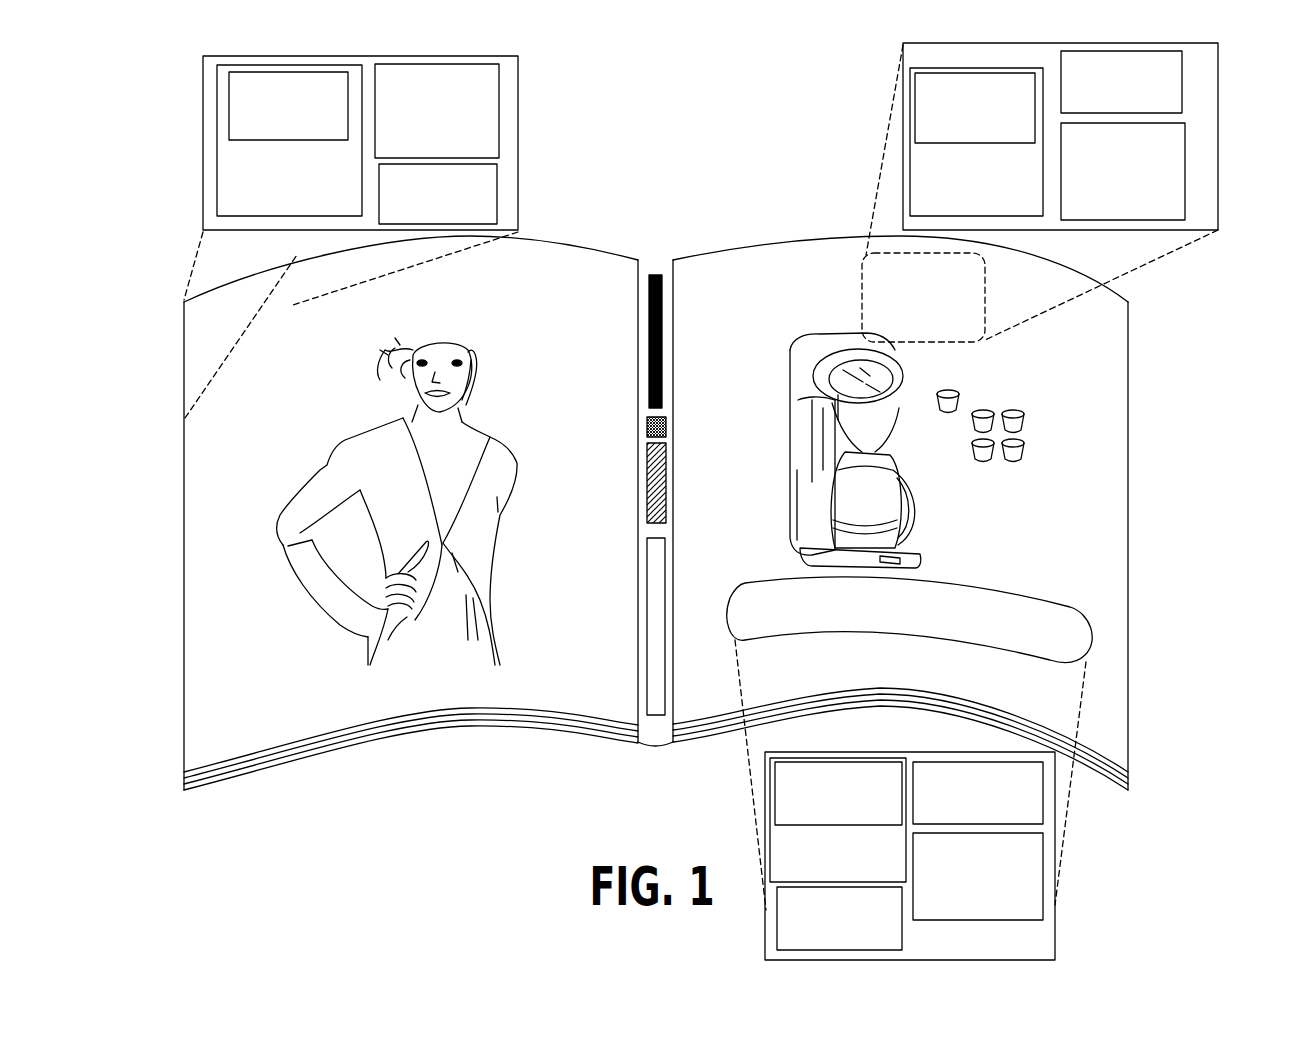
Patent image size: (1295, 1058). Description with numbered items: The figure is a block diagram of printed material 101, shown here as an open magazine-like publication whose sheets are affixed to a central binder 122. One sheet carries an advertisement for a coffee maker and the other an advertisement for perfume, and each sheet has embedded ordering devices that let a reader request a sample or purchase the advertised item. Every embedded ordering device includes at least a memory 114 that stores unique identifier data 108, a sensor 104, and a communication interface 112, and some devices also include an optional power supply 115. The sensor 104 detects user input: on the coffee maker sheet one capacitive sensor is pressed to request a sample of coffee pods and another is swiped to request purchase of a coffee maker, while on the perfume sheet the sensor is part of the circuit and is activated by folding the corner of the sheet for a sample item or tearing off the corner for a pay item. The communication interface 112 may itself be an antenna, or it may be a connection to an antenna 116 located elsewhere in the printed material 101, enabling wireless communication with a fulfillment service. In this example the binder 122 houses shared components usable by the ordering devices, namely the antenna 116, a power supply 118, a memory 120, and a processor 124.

The printed material 101 is at (659, 187).
The sensor 104 is at (420, 215).
The unique identifier data 108 is at (270, 131).
The communication interface 112 is at (419, 145).
The memory 114 is at (270, 194).
The power supply 115 is at (821, 943).
The antenna 116 is at (657, 275).
The power supply 118 is at (657, 715).
The memory 120 is at (668, 473).
The binder 122 is at (650, 258).
The processor 124 is at (668, 425).